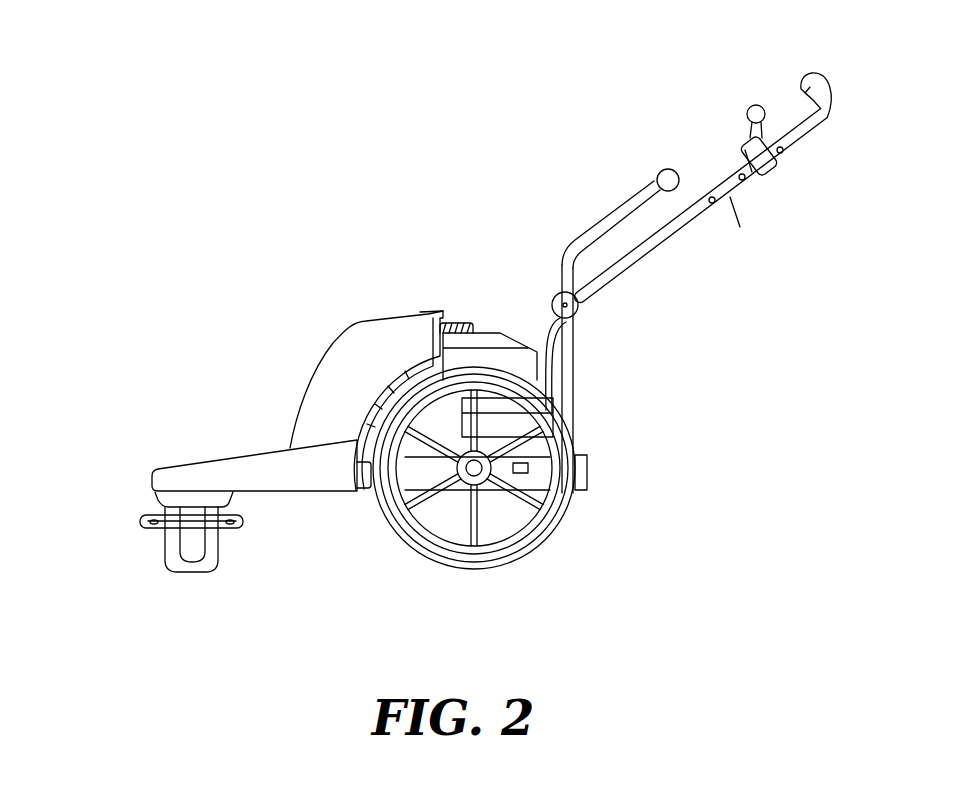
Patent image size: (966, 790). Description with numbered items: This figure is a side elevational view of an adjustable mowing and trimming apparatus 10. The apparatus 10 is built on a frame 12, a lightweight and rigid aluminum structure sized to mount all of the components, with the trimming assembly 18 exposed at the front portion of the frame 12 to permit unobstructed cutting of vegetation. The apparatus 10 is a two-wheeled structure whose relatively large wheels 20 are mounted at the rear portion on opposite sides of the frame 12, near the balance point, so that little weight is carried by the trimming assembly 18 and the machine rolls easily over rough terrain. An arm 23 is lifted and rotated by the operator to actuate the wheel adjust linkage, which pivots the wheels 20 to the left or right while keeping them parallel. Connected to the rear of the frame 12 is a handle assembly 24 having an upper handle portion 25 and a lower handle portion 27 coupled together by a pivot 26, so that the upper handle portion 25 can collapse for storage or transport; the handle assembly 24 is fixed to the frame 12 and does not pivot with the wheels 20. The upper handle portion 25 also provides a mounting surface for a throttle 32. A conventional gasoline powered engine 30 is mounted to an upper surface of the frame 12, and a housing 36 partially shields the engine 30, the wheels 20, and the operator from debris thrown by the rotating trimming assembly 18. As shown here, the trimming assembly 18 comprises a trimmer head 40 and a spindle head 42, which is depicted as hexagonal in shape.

The adjustable mowing and trimming apparatus 10 is at (273, 185).
The frame 12 is at (585, 470).
The trimming assembly 18 is at (158, 551).
The wheels 20 is at (413, 545).
The arm 23 is at (628, 211).
The handle assembly 24 is at (832, 132).
The upper handle portion 25 is at (683, 220).
The pivotal coupling 26 is at (568, 305).
The lower handle portion 27 is at (567, 388).
The engine 30 is at (497, 341).
The throttle 32 is at (754, 137).
The housing 36 is at (371, 390).
The trimmer head 40 is at (240, 523).
The spindle head 42 is at (215, 551).